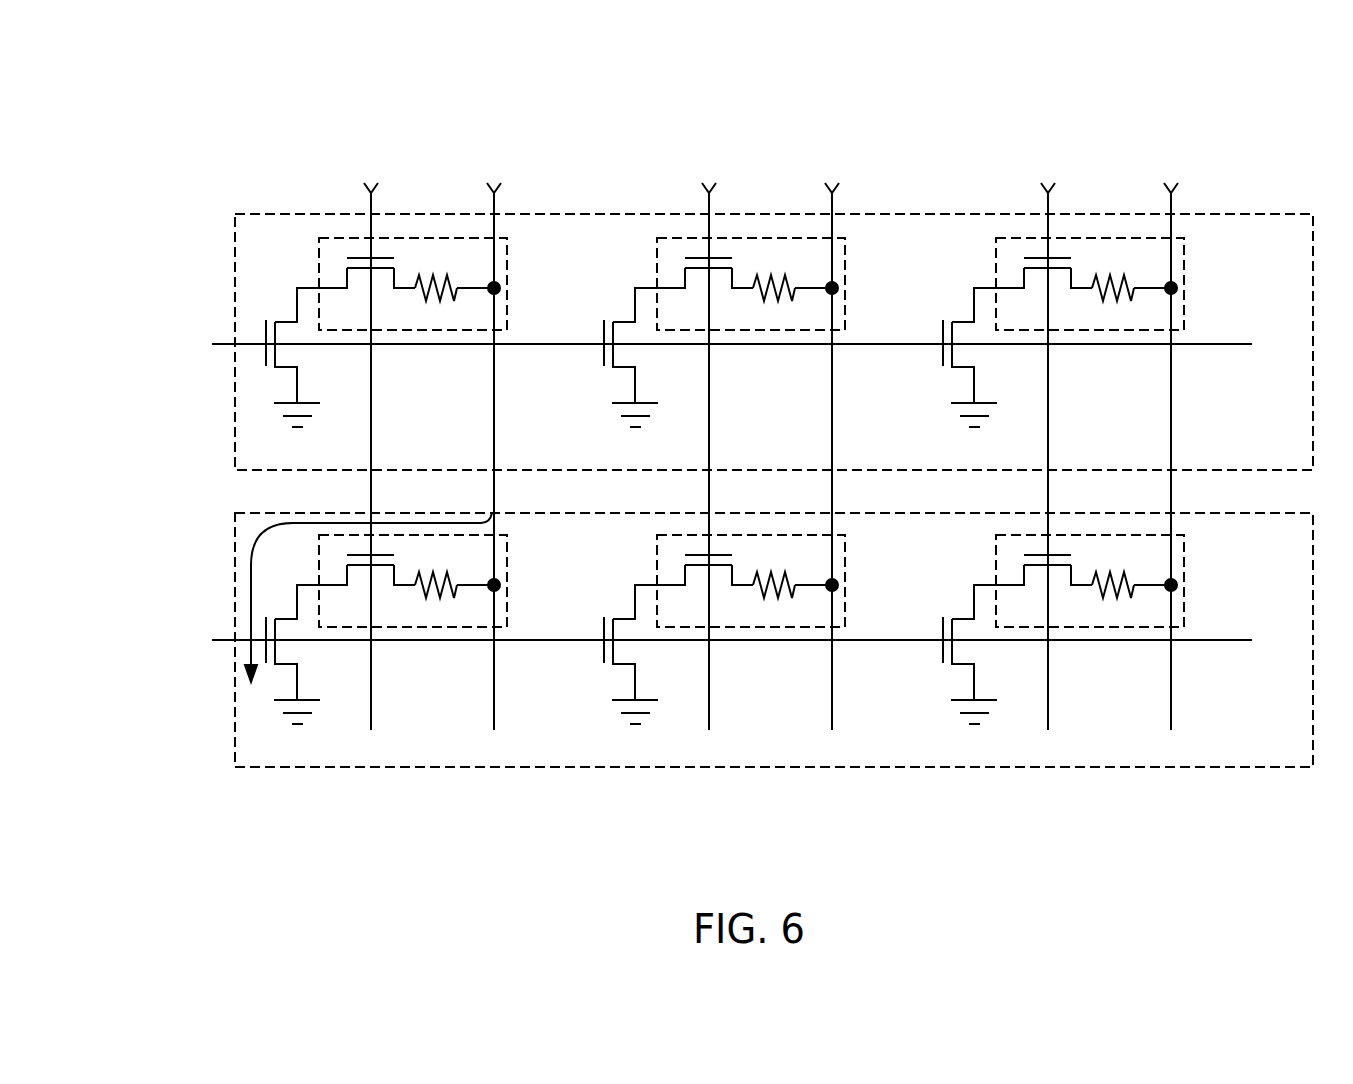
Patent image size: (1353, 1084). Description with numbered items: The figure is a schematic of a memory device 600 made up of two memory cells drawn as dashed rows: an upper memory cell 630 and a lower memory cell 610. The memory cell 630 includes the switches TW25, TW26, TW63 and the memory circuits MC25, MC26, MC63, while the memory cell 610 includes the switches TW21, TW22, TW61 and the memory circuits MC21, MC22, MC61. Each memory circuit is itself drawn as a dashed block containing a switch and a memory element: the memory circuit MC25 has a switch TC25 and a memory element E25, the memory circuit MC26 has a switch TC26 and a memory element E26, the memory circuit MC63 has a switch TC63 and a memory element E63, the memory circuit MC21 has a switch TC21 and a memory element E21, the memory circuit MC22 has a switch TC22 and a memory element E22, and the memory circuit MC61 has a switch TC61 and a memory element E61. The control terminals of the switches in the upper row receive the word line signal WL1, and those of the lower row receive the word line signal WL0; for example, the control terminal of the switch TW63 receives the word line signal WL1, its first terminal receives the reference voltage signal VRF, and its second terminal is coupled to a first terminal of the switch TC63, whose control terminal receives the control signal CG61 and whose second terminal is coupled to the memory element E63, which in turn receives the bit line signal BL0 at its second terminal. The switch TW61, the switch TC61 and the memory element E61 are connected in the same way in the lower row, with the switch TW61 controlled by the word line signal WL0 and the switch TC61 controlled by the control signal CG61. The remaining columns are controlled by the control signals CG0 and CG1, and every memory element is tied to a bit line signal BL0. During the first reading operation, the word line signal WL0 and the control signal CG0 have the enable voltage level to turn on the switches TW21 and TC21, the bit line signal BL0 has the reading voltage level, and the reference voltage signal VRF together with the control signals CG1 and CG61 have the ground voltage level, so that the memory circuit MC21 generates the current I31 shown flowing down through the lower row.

The memory device 600 is at (138, 83).
The memory cell 630 is at (235, 247).
The memory cell 610 is at (235, 545).
The current I31 is at (248, 596).
The word line signal WL1 is at (202, 337).
The word line signal WL0 is at (202, 633).
The control signal CG0 is at (370, 441).
The control signal CG1 is at (708, 441).
The control signal CG61 is at (1055, 441).
The bit line signal BL0 is at (832, 441).
The reference voltage signal VRF is at (635, 580).
The memory circuit MC25 is at (507, 258).
The memory circuit MC26 is at (779, 280).
The memory circuit MC63 is at (1119, 280).
The memory circuit MC21 is at (441, 577).
The memory circuit MC22 is at (779, 577).
The memory circuit MC61 is at (1118, 577).
The memory element E25 is at (437, 272).
The memory element E26 is at (775, 272).
The memory element E63 is at (1114, 272).
The memory element E21 is at (437, 569).
The memory element E22 is at (775, 569).
The memory element E61 is at (1114, 569).
The switch TC25 is at (366, 289).
The switch TC26 is at (704, 289).
The switch TC63 is at (1043, 289).
The switch TC21 is at (366, 586).
The switch TC22 is at (704, 586).
The switch TC61 is at (1043, 586).
The switch TW25 is at (316, 361).
The switch TW26 is at (654, 361).
The switch TW63 is at (993, 361).
The switch TW21 is at (316, 658).
The switch TW22 is at (654, 658).
The switch TW61 is at (993, 658).